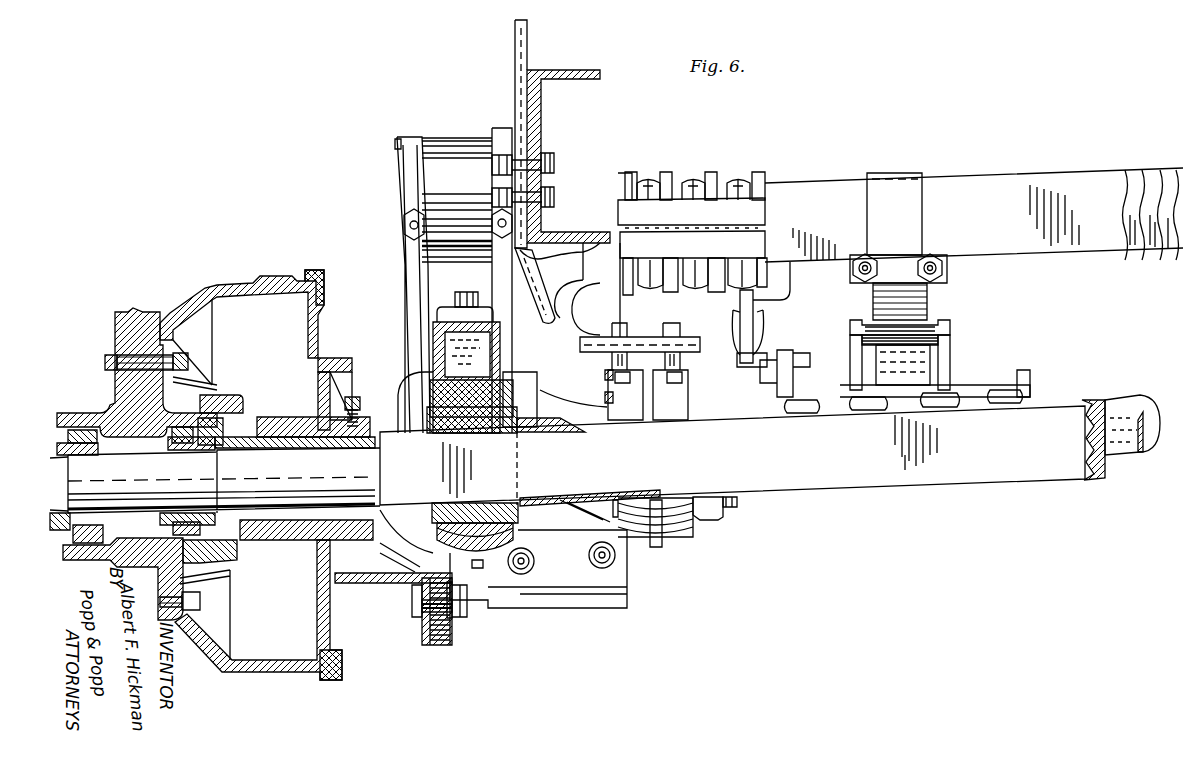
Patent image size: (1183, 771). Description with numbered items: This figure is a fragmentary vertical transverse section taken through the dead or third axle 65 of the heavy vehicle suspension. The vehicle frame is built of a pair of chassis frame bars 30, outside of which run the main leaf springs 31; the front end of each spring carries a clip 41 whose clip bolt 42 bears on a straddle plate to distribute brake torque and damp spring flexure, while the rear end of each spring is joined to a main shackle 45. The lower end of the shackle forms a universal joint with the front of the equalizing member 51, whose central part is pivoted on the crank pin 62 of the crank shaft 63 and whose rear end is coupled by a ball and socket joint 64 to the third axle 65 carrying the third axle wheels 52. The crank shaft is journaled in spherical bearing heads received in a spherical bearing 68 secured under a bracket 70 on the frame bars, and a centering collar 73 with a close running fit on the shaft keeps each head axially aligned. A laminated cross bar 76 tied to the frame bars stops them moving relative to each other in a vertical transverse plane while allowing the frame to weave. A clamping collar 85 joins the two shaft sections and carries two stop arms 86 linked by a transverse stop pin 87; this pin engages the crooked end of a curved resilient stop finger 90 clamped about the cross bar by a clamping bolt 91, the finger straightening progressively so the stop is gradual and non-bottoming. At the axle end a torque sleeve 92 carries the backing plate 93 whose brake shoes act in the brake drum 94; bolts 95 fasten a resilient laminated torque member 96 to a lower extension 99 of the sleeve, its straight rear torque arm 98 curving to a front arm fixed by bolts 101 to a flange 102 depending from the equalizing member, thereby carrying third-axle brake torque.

The chassis frame bars 30 is at (560, 70).
The main leaf springs 31 is at (425, 272).
The clip 41 is at (556, 196).
The clip bolt 42 is at (605, 372).
The main shackle 45 is at (405, 291).
The equalizing member 51 is at (430, 375).
The third axle wheels 52 is at (115, 318).
The crank pin 62 is at (545, 373).
The crank shaft 63 is at (1128, 400).
The ball and socket joint 64 is at (470, 392).
The dead or third axle 65 is at (905, 487).
The spherical bearing 68 is at (700, 346).
The bracket 70 is at (592, 300).
The centering collar 73 is at (710, 520).
The laminated cross bar 76 is at (1160, 172).
The clamping collar 85 is at (852, 383).
The stop arms 86 is at (852, 357).
The stop pin 87 is at (950, 327).
The resilient stop finger 90 is at (893, 173).
The clamping bolt 91 is at (852, 270).
The torque sleeve 92 is at (346, 358).
The backing plate 93 is at (315, 268).
The brake drum 94 is at (210, 290).
The bolts 95 is at (470, 600).
The resilient laminated torque member 96 is at (458, 636).
The rear torque arm 98 is at (455, 628).
The lower extension 99 is at (418, 635).
The bolts 101 is at (600, 568).
The flange 102 is at (610, 513).